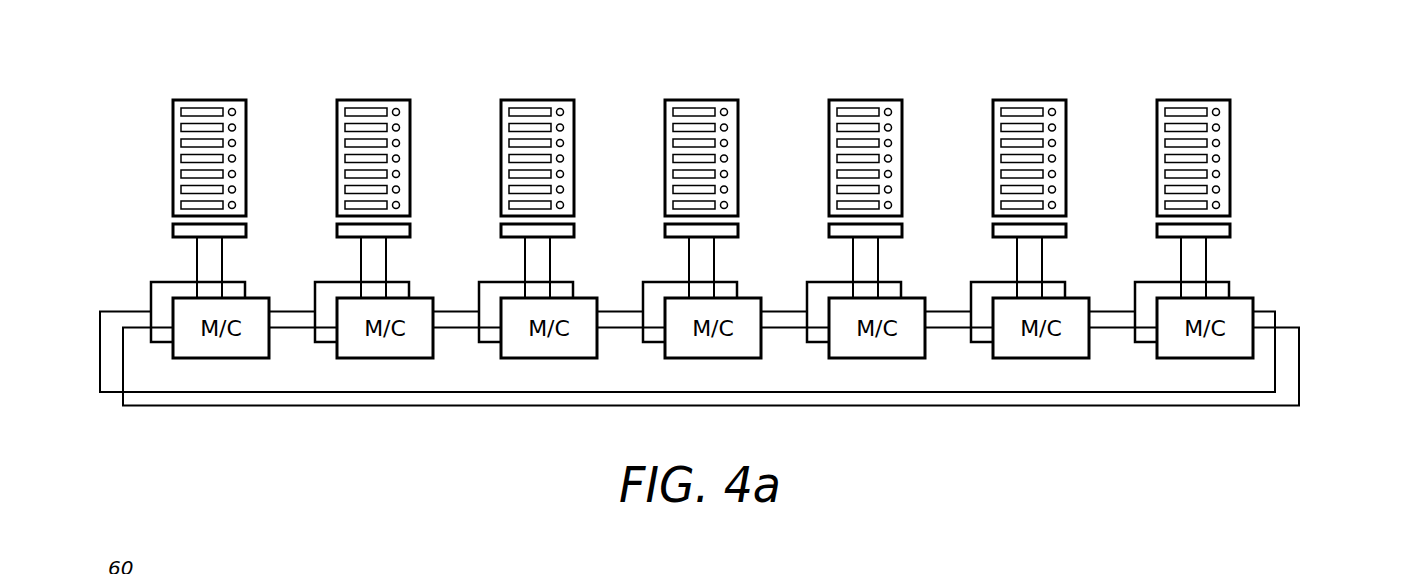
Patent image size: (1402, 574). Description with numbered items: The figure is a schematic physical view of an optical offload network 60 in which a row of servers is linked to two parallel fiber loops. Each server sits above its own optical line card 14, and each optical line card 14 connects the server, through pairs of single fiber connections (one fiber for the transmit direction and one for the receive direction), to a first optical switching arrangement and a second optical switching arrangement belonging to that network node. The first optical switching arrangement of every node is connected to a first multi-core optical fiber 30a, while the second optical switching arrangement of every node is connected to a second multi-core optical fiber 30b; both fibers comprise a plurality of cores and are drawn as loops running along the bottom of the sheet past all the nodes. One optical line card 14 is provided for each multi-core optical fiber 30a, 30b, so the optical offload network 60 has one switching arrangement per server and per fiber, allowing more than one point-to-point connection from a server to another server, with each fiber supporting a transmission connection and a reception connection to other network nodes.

The optical line card 14 is at (173, 231).
The first multi-core optical fiber 30a is at (1275, 360).
The second multi-core optical fiber 30b is at (1299, 396).
The optical offload network 60 is at (74, 138).